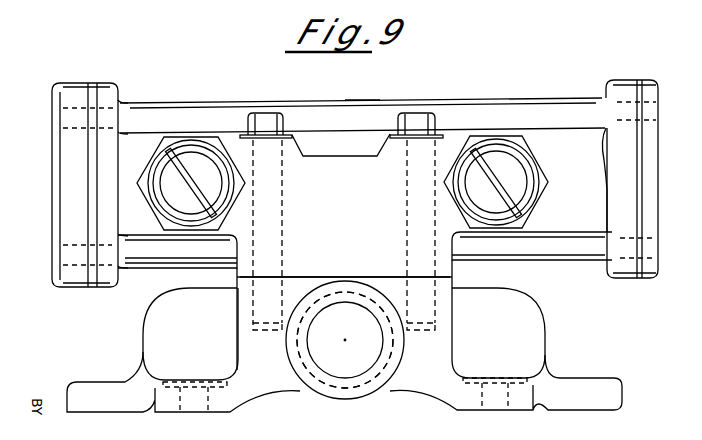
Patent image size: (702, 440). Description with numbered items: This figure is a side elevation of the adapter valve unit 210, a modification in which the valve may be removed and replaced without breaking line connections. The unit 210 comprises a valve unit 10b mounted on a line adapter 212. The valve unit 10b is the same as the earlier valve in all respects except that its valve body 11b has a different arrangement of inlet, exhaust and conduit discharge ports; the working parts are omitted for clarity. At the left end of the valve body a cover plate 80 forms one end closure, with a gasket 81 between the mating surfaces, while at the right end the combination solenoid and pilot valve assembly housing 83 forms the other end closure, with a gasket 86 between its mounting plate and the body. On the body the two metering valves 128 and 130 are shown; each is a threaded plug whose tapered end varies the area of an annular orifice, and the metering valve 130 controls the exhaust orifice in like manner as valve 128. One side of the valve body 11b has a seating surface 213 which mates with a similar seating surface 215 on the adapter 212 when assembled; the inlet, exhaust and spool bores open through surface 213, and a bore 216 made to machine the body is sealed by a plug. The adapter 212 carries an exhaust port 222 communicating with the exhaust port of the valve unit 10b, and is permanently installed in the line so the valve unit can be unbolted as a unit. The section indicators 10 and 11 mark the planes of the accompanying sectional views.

The valve unit 10b is at (540, 94).
The valve body 11b is at (361, 112).
The cover plate 80 is at (68, 288).
The gasket 81 is at (93, 287).
The solenoid and pilot valve assembly housing 83 is at (649, 78).
The gasket 86 is at (639, 80).
The metering valve 128 is at (187, 235).
The metering valve 130 is at (534, 157).
The adapter valve unit 210 is at (535, 274).
The line adapter 212 is at (548, 343).
The seating surface 213 is at (299, 282).
The seating surface 215 is at (347, 279).
The exhaust port 222 is at (357, 363).
The bore 216 is at (690, 439).
The section line 10- 10 is at (358, 85).
The section line 11- 11 is at (68, 188).